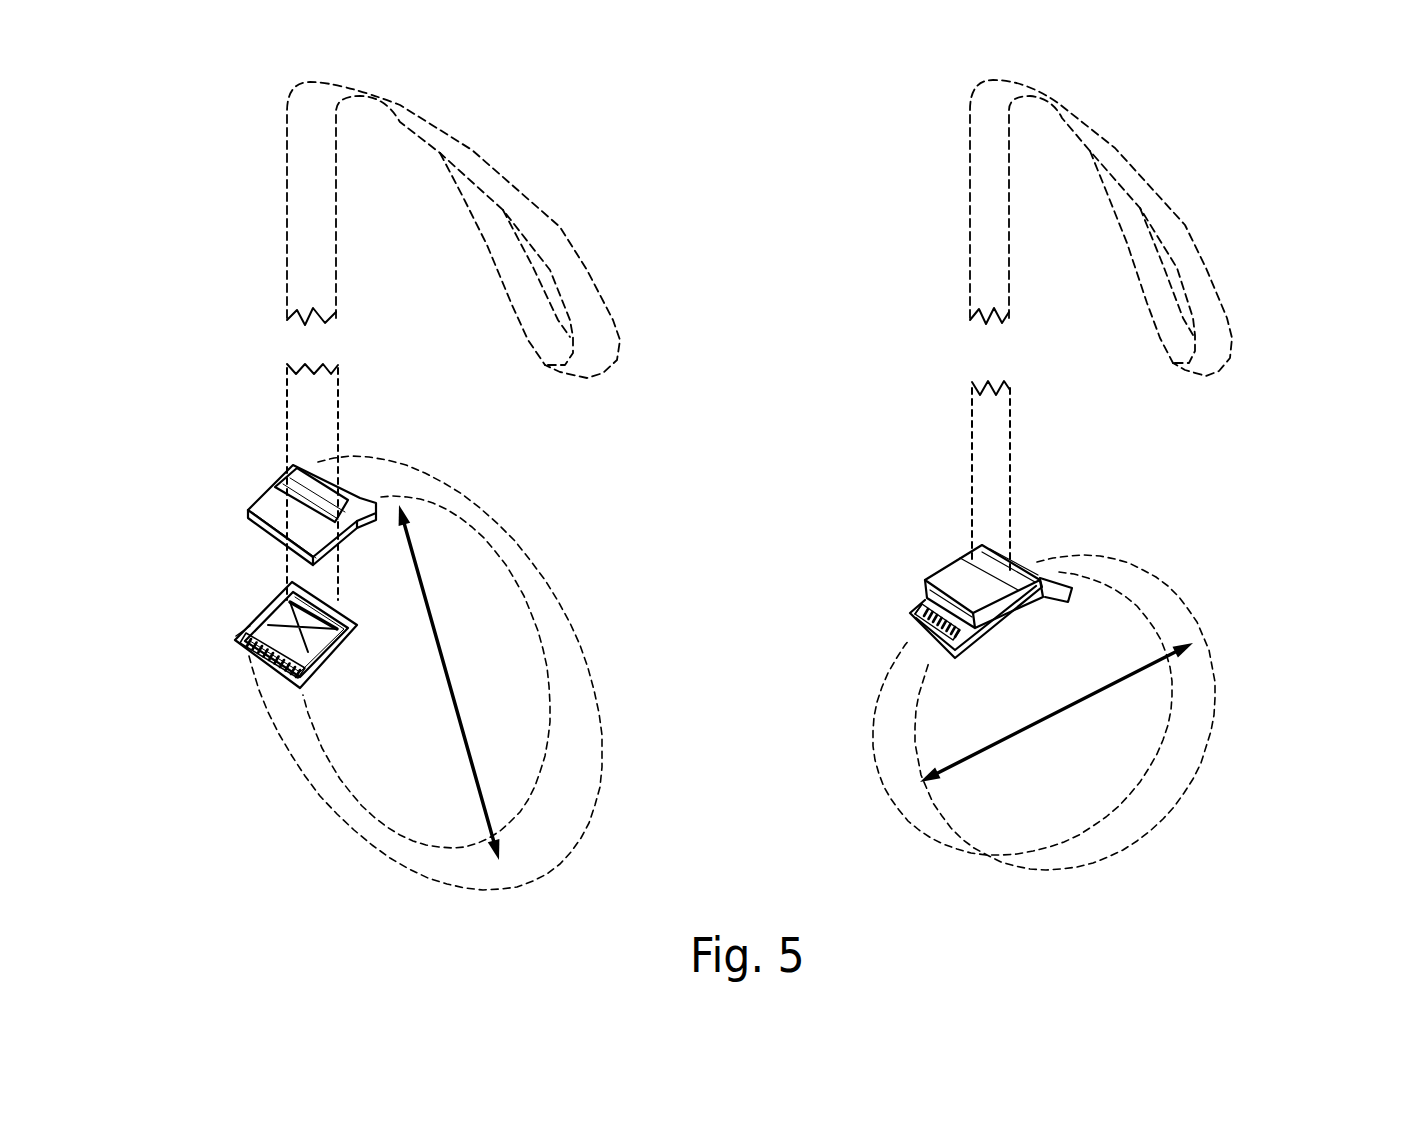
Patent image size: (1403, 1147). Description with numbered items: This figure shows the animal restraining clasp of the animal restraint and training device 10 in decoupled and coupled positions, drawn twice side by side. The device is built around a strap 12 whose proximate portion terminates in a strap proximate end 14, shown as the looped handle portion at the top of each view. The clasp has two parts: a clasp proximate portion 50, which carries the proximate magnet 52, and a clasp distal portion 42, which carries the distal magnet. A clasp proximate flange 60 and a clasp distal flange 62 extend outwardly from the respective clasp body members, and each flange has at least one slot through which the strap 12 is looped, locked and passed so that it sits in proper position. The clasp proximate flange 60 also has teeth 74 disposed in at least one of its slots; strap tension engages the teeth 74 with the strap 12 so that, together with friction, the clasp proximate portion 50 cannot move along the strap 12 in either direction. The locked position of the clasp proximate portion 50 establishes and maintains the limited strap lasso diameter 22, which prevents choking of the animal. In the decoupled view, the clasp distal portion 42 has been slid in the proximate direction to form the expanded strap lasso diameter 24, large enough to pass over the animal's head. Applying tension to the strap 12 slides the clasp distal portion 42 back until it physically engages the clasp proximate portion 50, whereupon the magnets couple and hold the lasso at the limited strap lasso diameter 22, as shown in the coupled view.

The animal restraint and training device 10 is at (850, 191).
The strap 12 is at (312, 410).
The strap proximate end 14 is at (600, 347).
The limited strap lasso diameter 22 is at (1020, 730).
The expanded strap lasso diameter 24 is at (455, 699).
The clasp distal portion 42 is at (970, 590).
The clasp proximate portion 50 is at (340, 630).
The proximate magnet 52 is at (288, 600).
The clasp proximate flange 60 is at (280, 657).
The clasp distal flange 62 is at (347, 487).
The teeth 74 is at (257, 640).